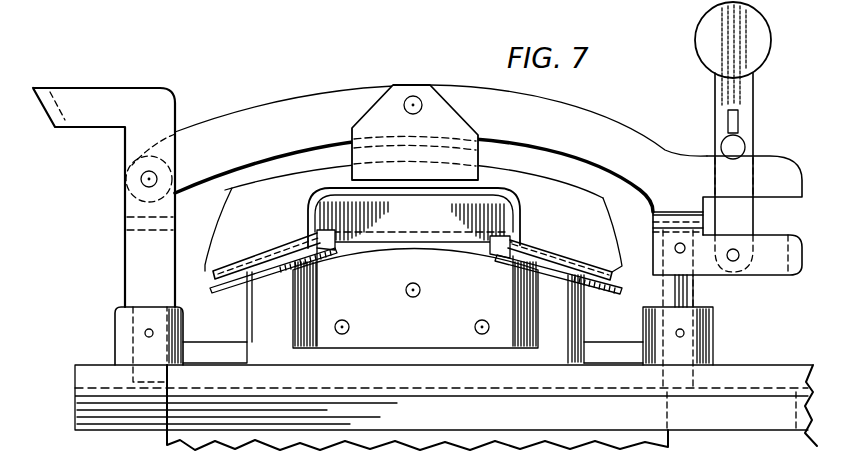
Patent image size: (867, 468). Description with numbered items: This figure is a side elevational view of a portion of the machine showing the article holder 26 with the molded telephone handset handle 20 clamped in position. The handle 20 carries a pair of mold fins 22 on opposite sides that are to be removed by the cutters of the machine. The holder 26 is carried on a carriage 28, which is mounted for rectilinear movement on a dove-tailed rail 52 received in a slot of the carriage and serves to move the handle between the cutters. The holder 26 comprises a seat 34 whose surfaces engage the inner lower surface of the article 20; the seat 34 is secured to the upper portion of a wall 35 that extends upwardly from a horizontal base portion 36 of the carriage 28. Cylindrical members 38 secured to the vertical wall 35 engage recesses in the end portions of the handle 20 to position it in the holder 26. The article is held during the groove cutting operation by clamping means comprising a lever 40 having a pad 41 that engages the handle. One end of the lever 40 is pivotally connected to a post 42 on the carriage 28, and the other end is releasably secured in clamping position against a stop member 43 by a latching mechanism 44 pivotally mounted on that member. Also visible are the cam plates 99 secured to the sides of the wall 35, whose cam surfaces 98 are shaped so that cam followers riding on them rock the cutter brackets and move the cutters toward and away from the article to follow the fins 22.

The telephone handset handle 20 is at (507, 173).
The fins 22 is at (507, 200).
The holder 26 is at (192, 98).
The carriage 28 is at (84, 366).
The seat 34 is at (340, 222).
The wall 35 is at (313, 238).
The base portion 36 is at (742, 371).
The cylindrical members 38 is at (232, 286).
The lever 40 is at (297, 113).
The pad 41 is at (380, 150).
The post 42 is at (133, 258).
The stop member 43 is at (698, 237).
The latching mechanism 44 is at (760, 139).
The rail 52 is at (668, 410).
The cam surfaces 98 is at (380, 257).
The cam plates 99 is at (400, 327).